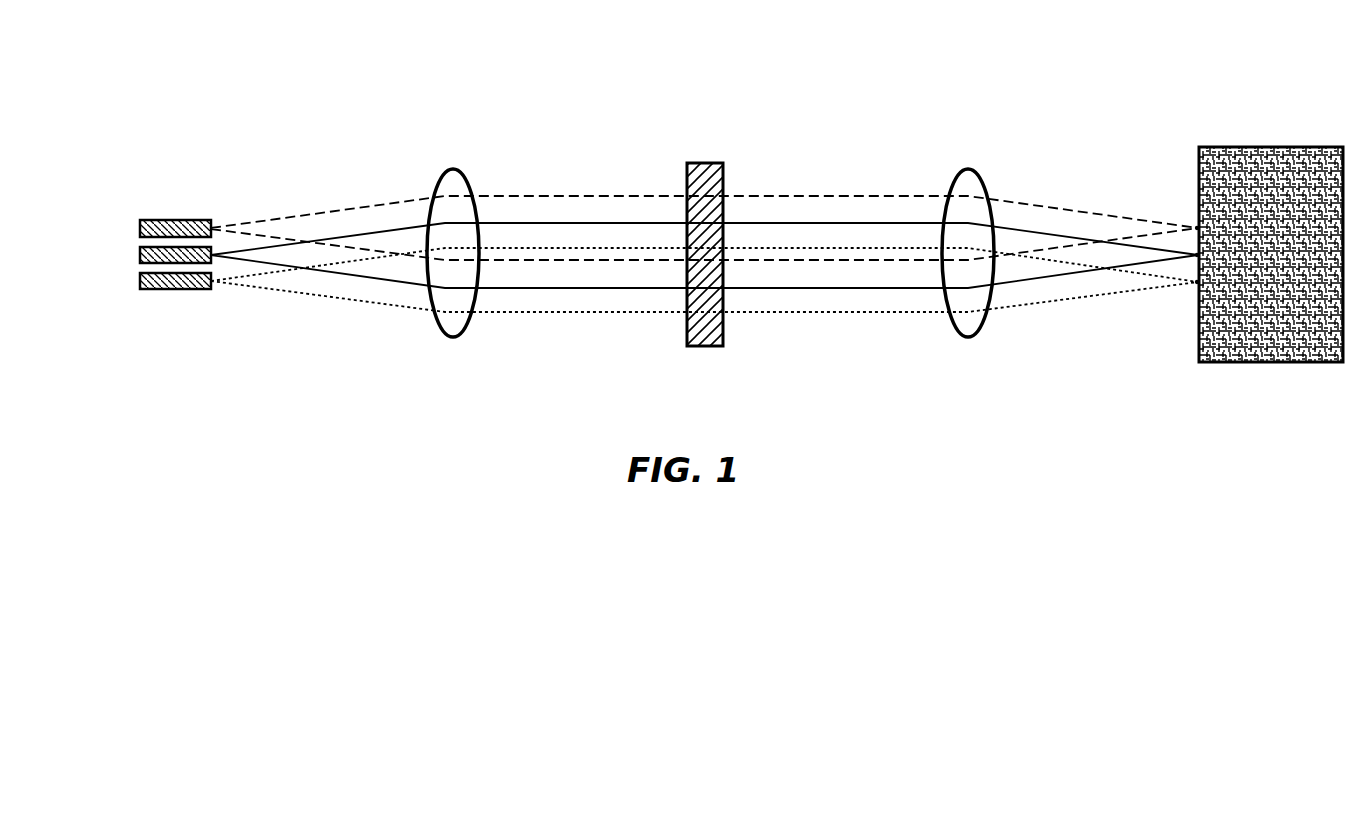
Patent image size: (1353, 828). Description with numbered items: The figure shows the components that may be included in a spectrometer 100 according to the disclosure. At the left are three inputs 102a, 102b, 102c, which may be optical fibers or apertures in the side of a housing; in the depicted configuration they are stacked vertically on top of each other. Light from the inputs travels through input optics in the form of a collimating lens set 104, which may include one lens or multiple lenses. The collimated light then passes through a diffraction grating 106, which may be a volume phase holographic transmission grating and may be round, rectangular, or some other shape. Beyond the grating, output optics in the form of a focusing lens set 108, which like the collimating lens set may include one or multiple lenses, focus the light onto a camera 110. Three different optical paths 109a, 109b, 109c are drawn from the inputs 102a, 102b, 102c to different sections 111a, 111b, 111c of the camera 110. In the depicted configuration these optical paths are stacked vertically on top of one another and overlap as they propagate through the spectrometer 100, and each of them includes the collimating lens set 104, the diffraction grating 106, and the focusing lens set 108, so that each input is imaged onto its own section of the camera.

The spectrometer 100 is at (281, 118).
The input 102a is at (138, 227).
The input 102b is at (140, 254).
The input 102c is at (140, 280).
The collimating lens set 104 is at (447, 172).
The diffraction grating 106 is at (705, 163).
The focusing lens set 108 is at (966, 170).
The optical path 109a is at (289, 240).
The optical path 109b is at (243, 252).
The optical path 109c is at (350, 262).
The camera 110 is at (1238, 147).
The section of the camera 111a is at (1198, 228).
The section of the camera 111b is at (1198, 255).
The section of the camera 111c is at (1198, 283).